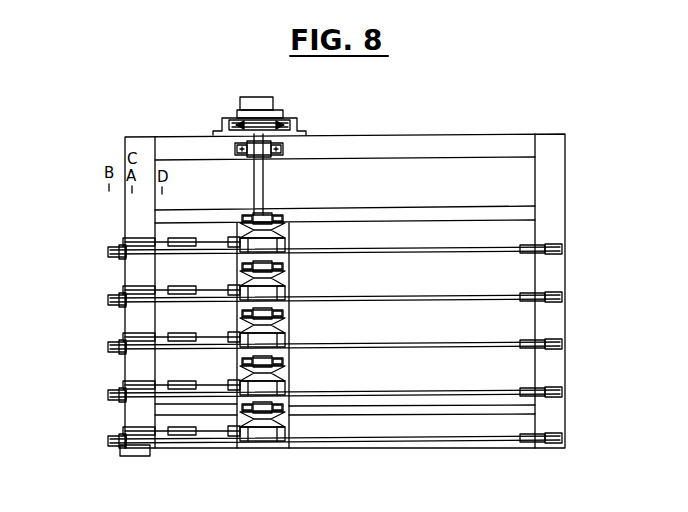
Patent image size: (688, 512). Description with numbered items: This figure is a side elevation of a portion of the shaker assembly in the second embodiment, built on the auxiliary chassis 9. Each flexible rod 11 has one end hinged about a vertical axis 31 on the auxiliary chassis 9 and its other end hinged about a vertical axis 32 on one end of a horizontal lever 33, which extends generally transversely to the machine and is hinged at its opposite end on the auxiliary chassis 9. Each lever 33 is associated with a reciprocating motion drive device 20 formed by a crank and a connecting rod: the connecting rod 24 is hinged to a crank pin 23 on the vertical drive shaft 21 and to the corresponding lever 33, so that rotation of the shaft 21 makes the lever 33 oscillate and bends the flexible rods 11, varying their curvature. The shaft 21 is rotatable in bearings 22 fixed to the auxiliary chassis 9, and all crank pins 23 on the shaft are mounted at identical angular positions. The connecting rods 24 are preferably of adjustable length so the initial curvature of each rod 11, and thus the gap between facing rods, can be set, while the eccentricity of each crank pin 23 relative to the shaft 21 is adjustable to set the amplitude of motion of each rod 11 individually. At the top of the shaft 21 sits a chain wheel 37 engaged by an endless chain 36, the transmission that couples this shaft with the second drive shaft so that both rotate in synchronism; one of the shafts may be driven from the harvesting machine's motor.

The auxiliary chassis 9 is at (439, 130).
The flexible rod 11 is at (398, 297).
The reciprocating motion drive device 20 is at (301, 237).
The drive shaft 21 is at (264, 182).
The bearing 22 is at (256, 154).
The crank pin 23 is at (250, 432).
The connecting rod 24 is at (217, 233).
The vertical axis 31 is at (548, 297).
The vertical axis 32 is at (110, 349).
The horizontal lever 33 is at (128, 259).
The endless chain 36 is at (291, 124).
The chain wheel 37 is at (246, 127).